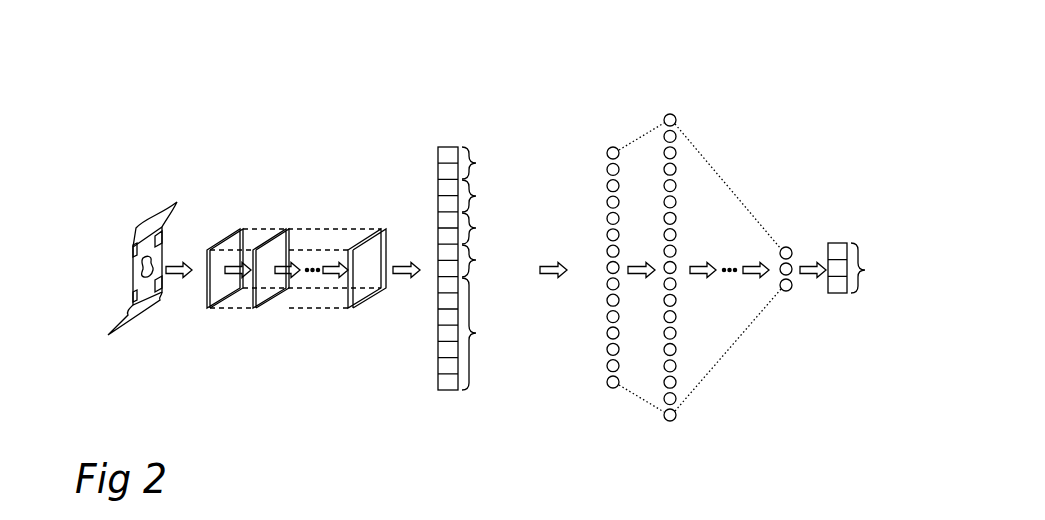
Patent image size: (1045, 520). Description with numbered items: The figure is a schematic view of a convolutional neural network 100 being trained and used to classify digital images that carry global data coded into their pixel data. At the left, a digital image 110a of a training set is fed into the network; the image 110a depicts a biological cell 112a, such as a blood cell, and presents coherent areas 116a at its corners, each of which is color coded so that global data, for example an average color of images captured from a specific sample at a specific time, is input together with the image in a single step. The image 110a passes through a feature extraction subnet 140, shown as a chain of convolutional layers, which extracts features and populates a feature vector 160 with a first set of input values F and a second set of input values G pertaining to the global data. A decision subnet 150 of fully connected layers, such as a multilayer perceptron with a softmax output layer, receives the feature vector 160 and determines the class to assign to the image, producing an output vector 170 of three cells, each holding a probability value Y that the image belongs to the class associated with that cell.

The convolutional neural network 100 is at (230, 80).
The digital image 110a is at (120, 238).
The feature / opening of component 112a is at (140, 273).
The coherent area 116a is at (146, 271).
The feature extraction subnet 140 is at (292, 210).
The feature vector 160 is at (462, 138).
The decision subnet 150 is at (724, 108).
The output vector 170 is at (846, 230).